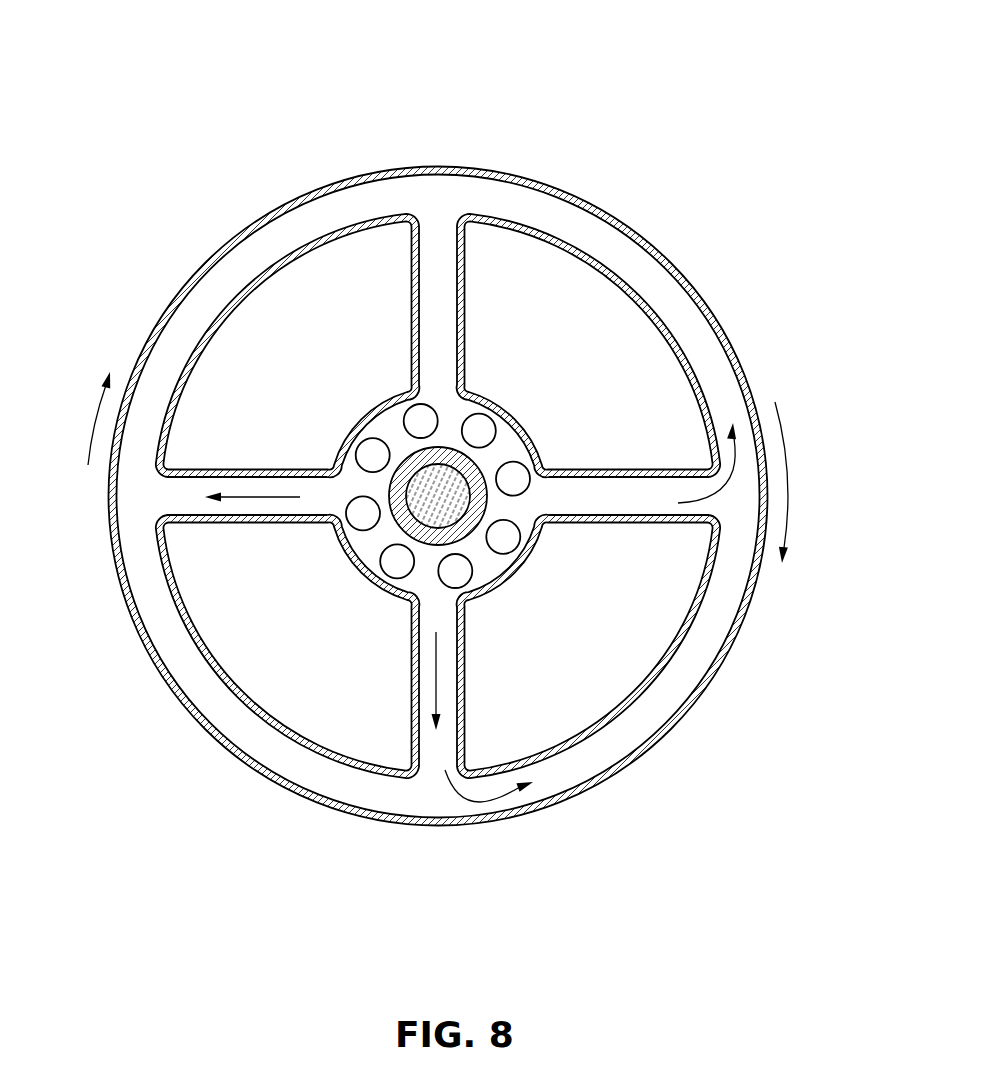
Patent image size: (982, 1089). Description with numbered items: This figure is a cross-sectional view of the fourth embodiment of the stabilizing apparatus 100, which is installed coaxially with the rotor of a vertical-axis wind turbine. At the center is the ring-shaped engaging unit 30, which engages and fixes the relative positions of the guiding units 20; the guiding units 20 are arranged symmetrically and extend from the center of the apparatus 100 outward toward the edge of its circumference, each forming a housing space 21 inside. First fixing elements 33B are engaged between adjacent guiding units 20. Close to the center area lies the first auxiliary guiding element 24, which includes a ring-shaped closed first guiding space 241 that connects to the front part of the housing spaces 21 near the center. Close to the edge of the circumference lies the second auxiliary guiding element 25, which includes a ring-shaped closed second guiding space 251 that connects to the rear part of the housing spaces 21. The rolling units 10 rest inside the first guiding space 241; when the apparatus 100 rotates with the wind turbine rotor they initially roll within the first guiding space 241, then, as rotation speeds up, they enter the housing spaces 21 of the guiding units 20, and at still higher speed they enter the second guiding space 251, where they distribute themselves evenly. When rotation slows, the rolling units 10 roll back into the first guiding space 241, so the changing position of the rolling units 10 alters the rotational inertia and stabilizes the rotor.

The apparatus 100 is at (635, 172).
The second auxiliary guiding element 25 is at (204, 268).
The second guiding space 251 is at (262, 742).
The first fixing elements 33B is at (321, 290).
The guiding unit 20 is at (233, 470).
The housing space 21 is at (443, 303).
The engaging unit 30 is at (408, 527).
The first auxiliary guiding element 24 is at (510, 422).
The first guiding space 241 is at (387, 427).
The rolling unit 10 is at (395, 563).